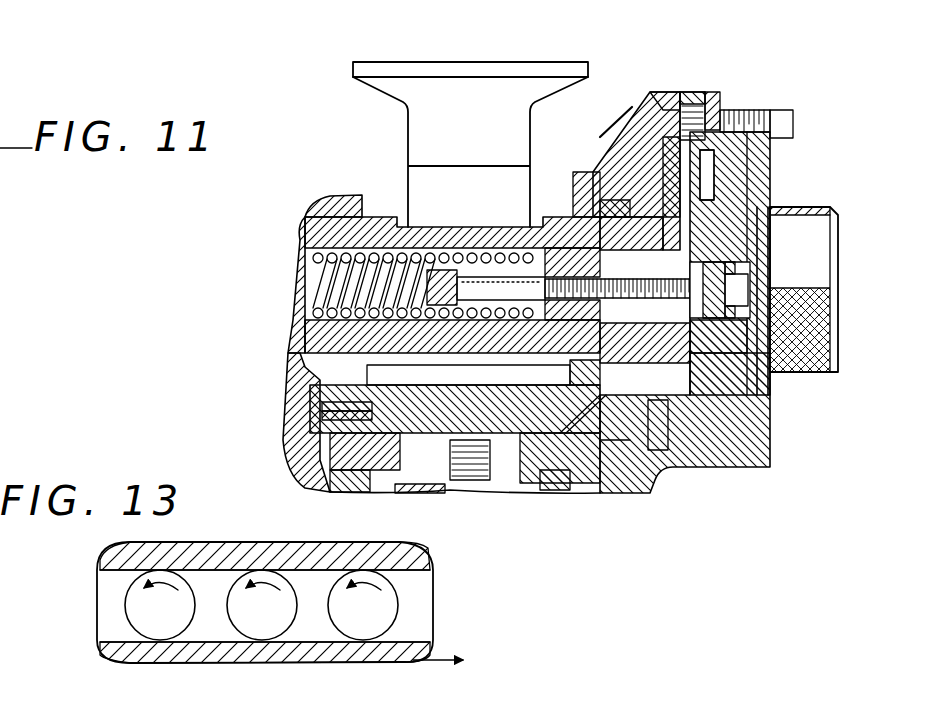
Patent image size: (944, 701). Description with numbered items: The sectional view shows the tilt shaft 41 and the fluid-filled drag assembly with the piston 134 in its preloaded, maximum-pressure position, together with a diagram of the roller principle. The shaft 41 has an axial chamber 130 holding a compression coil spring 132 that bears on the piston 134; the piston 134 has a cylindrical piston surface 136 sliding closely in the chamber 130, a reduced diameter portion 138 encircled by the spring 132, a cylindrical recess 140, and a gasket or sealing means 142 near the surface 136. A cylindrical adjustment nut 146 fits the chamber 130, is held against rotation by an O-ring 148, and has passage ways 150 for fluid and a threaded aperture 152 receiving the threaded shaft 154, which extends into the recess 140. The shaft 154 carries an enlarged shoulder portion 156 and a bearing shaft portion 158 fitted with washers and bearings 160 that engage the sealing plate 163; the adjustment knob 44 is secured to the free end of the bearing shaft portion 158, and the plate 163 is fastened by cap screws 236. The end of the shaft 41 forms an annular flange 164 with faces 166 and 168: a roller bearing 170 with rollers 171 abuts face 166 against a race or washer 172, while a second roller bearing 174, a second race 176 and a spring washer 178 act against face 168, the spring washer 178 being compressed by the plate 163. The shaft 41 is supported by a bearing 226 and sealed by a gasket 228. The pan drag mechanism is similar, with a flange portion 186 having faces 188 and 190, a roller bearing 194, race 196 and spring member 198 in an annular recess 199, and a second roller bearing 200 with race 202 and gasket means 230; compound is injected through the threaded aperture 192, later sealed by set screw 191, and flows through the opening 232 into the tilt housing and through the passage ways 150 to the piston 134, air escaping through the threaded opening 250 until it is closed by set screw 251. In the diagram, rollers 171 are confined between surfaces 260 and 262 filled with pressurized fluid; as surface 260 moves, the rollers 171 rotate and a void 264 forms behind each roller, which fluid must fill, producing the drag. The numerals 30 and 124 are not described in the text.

In FIG. 11, the cap 30 is at (478, 72).
In FIG. 11, the shaft 41 is at (444, 270).
In FIG. 11, the adjustment knob 44 is at (800, 242).
In FIG. 11, the housing boss 124 is at (365, 205).
In FIG. 11, the cylindrical opening or chamber 130 is at (420, 248).
In FIG. 11, the compression coil spring 132 is at (380, 262).
In FIG. 11, the piston 134 is at (440, 322).
In FIG. 11, the cylindrical piston surface 136 is at (545, 318).
In FIG. 11, the reduced diameter portion 138 is at (460, 302).
In FIG. 11, the cylindrical recess or aperture 140 is at (494, 300).
In FIG. 11, the gasket or sealing means 142 is at (572, 270).
In FIG. 11, the adjustment nut 146 is at (610, 222).
In FIG. 11, the O-ring 148 is at (620, 330).
In FIG. 11, the apertures or passage ways 150 is at (639, 233).
In FIG. 11, the threaded aperture 152 is at (636, 276).
In FIG. 11, the threaded shaft 154 is at (665, 300).
In FIG. 11, the enlarged shoulder portion 156 is at (712, 272).
In FIG. 11, the bearing shaft portion 158 is at (740, 289).
In FIG. 11, the washers and bearings 160 is at (740, 265).
In FIG. 11, the cover or sealing plate 163 is at (775, 146).
In FIG. 11, the annular disc-like flange 164 is at (700, 392).
In FIG. 11, the flange face 166 is at (665, 165).
In FIG. 11, the flange face 168 is at (740, 185).
In FIG. 11, the roller bearing 170 is at (640, 126).
In FIG. 13, the rollers 171 is at (379, 615).
In FIG. 11, the race or washer 172 is at (618, 140).
In FIG. 11, the second roller bearing 174 is at (660, 106).
In FIG. 11, the second race or washer 176 is at (714, 168).
In FIG. 11, the spring washer 178 is at (735, 112).
In FIG. 11, the enlarged flange portion 186 is at (637, 452).
In FIG. 11, the flange face 188 is at (600, 490).
In FIG. 11, the flange face 190 is at (580, 440).
In FIG. 11, the set screw 191 is at (462, 440).
In FIG. 11, the threaded aperture 192 is at (507, 409).
In FIG. 11, the roller bearing 194 is at (455, 409).
In FIG. 11, the race or washer 196 is at (468, 377).
In FIG. 11, the spring member 198 is at (350, 404).
In FIG. 11, the annular recess 199 is at (555, 425).
In FIG. 11, the second roller bearing 200 is at (358, 460).
In FIG. 11, the second race or washer 202 is at (380, 498).
In FIG. 11, the bearing 226 is at (660, 378).
In FIG. 11, the fluid sealing gasket 228 is at (565, 194).
In FIG. 11, the gasket means 230 is at (400, 470).
In FIG. 11, the angularly extending enlarged opening 232 is at (575, 372).
In FIG. 11, the cap screws 236 is at (782, 112).
In FIG. 11, the threaded opening 250 is at (708, 115).
In FIG. 11, the set screw 251 is at (691, 108).
In FIG. 13, the surface 260 is at (98, 621).
In FIG. 13, the surface 262 is at (98, 581).
In FIG. 13, the void 264 is at (384, 645).